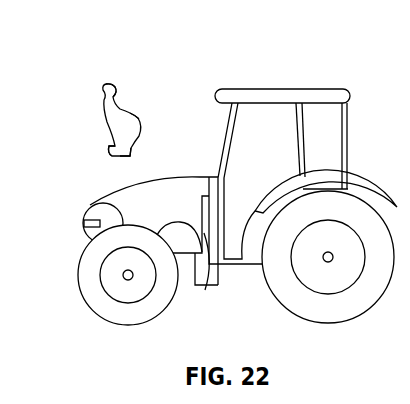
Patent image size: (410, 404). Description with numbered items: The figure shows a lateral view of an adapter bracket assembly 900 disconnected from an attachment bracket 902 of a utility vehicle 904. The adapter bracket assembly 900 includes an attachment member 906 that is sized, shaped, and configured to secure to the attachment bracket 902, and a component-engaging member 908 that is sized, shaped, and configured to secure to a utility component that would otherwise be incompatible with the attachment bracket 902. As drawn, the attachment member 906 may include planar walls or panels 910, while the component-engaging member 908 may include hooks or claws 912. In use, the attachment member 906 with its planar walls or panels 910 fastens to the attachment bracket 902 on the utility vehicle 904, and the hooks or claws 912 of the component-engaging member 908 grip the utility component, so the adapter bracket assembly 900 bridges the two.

The adapter bracket assembly 900 is at (113, 98).
The attachment bracket 902 is at (205, 288).
The utility vehicle 904 is at (84, 206).
The attachment member 906 is at (135, 117).
The component-engaging member 908 is at (107, 118).
The planar walls or panels 910 is at (137, 153).
The hooks or claws 912 is at (64, 29).